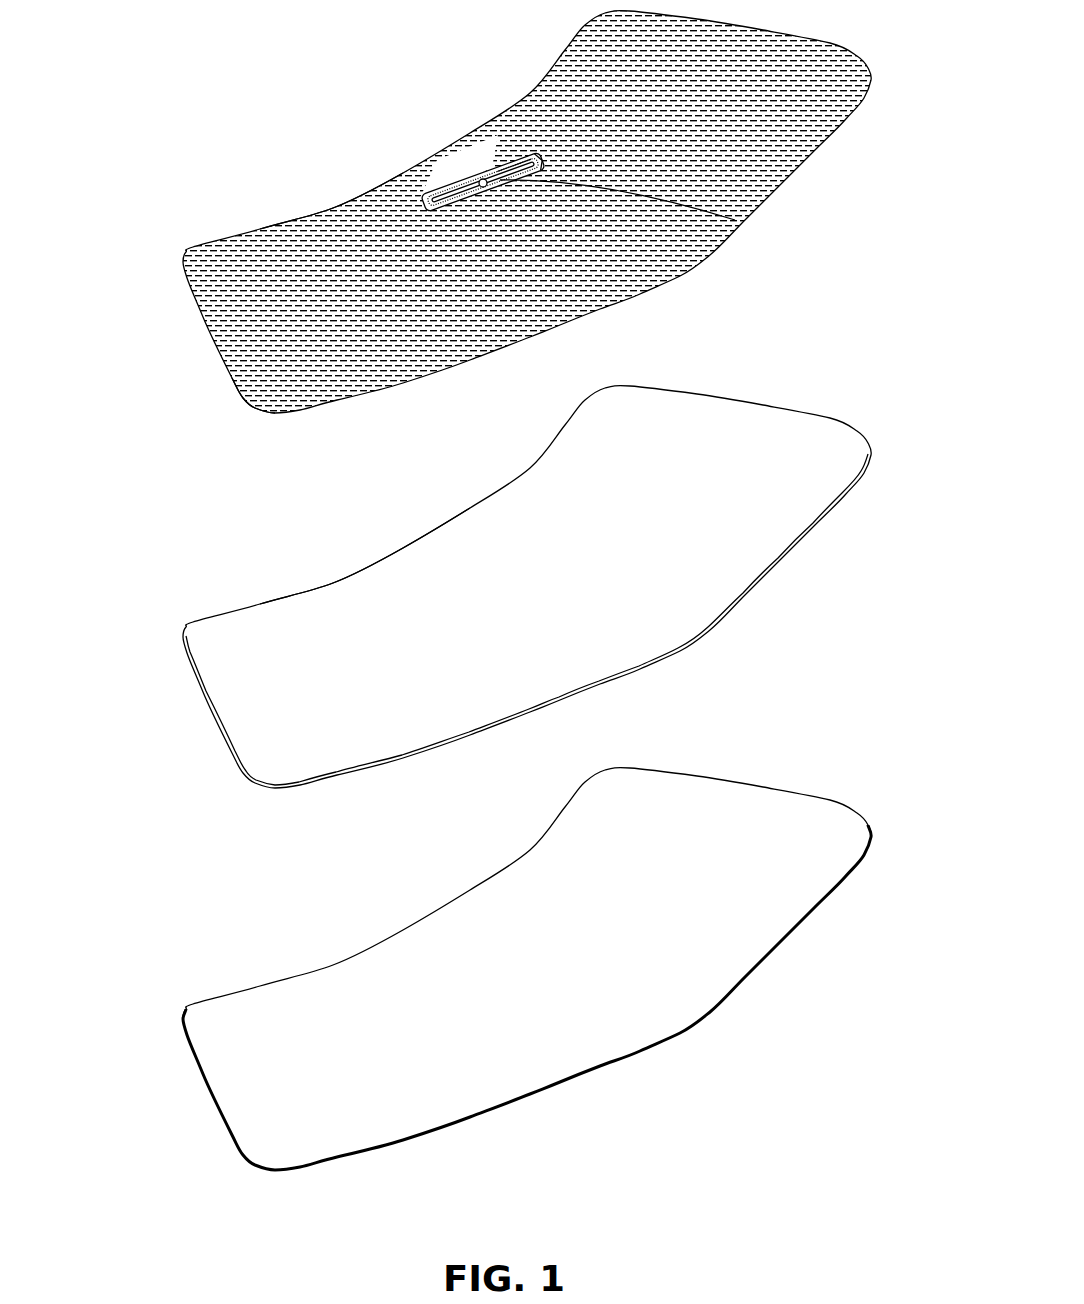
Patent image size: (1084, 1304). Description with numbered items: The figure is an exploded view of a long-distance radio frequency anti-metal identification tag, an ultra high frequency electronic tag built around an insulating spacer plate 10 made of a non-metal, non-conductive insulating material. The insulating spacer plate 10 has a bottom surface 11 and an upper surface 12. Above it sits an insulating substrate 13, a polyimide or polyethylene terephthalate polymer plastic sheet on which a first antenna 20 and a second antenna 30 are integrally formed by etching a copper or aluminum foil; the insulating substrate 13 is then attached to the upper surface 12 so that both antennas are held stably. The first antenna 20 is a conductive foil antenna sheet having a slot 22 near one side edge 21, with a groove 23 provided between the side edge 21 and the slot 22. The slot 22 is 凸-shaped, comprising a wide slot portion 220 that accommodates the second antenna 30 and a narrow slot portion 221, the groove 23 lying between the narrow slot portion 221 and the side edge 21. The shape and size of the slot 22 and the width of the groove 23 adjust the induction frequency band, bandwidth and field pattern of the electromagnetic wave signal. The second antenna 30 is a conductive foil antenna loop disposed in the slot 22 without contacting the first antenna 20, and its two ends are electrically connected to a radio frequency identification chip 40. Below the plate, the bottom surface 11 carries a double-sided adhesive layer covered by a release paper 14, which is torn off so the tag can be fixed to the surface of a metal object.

The insulating spacer plate 10 is at (208, 708).
The bottom surface 11 is at (272, 787).
The upper surface 12 is at (304, 613).
The insulating substrate 13 is at (250, 403).
The release paper 14 is at (237, 1077).
The first antenna 20 is at (347, 373).
The side edge 21 is at (333, 208).
The slot 22 is at (442, 203).
The groove 23 is at (440, 193).
The second antenna 30 is at (480, 182).
The radio frequency identification chip 40 is at (735, 220).
The wide slot portion 220 is at (520, 155).
The narrow slot portion 221 is at (492, 160).